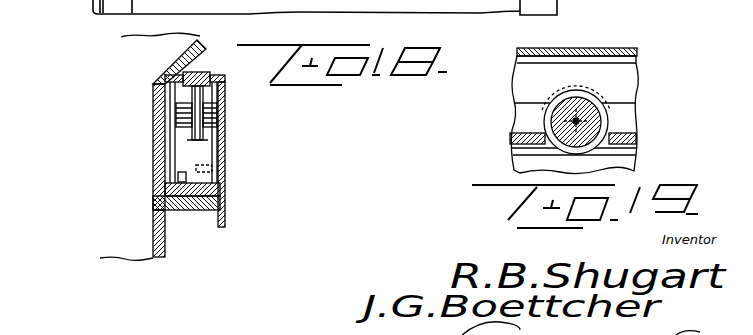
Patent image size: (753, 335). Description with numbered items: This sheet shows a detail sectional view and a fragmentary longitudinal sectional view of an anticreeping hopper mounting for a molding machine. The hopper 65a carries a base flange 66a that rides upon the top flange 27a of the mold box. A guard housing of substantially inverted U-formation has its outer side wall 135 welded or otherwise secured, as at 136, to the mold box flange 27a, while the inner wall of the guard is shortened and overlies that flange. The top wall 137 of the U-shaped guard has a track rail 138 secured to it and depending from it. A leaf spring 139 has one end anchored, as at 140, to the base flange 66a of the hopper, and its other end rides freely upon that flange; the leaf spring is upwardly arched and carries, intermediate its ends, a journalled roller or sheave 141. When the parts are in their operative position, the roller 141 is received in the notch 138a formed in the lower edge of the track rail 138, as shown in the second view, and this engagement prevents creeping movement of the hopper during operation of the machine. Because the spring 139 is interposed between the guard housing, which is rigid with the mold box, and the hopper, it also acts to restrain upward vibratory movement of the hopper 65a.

In FIG. 18, the top wall 137 is at (205, 46).
In FIG. 19, the top wall 137 is at (597, 48).
In FIG. 18, the track rail 138 is at (225, 97).
In FIG. 19, the track rail 138 is at (528, 85).
In FIG. 19, the notch 138a is at (593, 105).
In FIG. 18, the leaf spring 139 is at (188, 160).
In FIG. 19, the leaf spring 139 is at (515, 135).
In FIG. 18, the journalled roller or sheave 141 is at (205, 118).
In FIG. 19, the journalled roller or sheave 141 is at (606, 117).
In FIG. 18, the outer side wall 135 is at (245, 111).
In FIG. 18, the anchor point 140 is at (217, 168).
In FIG. 18, the weld 136 is at (227, 200).
In FIG. 18, the hopper 65a is at (153, 83).
In FIG. 18, the base flange 66a is at (178, 176).
In FIG. 18, the top flange 27a is at (187, 212).